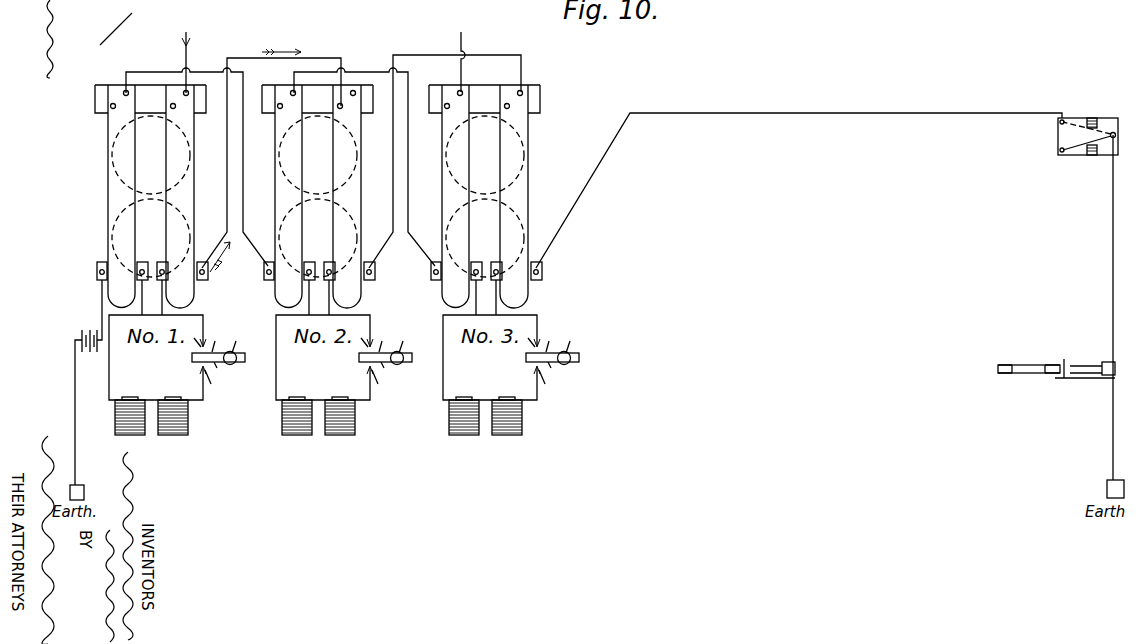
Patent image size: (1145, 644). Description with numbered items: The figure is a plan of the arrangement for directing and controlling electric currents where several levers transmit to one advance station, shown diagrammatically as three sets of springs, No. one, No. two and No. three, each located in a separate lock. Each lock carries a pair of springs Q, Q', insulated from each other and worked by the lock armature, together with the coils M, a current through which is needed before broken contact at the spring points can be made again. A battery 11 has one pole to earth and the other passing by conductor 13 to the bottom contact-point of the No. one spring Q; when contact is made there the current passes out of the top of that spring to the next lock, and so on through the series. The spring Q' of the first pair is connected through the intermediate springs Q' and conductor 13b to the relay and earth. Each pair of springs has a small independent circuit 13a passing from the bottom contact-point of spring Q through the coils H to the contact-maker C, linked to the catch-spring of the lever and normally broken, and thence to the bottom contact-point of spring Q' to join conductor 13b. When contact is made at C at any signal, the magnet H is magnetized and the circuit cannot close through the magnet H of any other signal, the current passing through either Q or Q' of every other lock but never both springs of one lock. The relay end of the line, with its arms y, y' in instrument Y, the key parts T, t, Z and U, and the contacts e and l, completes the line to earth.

The conductor 13 is at (278, 256).
The small independent circuit 13a is at (318, 299).
The conductor 13b is at (622, 152).
The battery 11 is at (90, 349).
The coils M is at (318, 196).
The spring Q is at (319, 196).
The contact-maker C is at (376, 358).
The contact e is at (399, 345).
The upper contact l is at (378, 361).
The magnet coils H is at (318, 425).
The switch instrument Y is at (1088, 285).
The switch arm y is at (1073, 124).
The switch arm y' is at (1068, 148).
The transmitting key T is at (1066, 379).
The key contacts t is at (1024, 375).
The key lever Z is at (1086, 355).
The key block U is at (1090, 369).